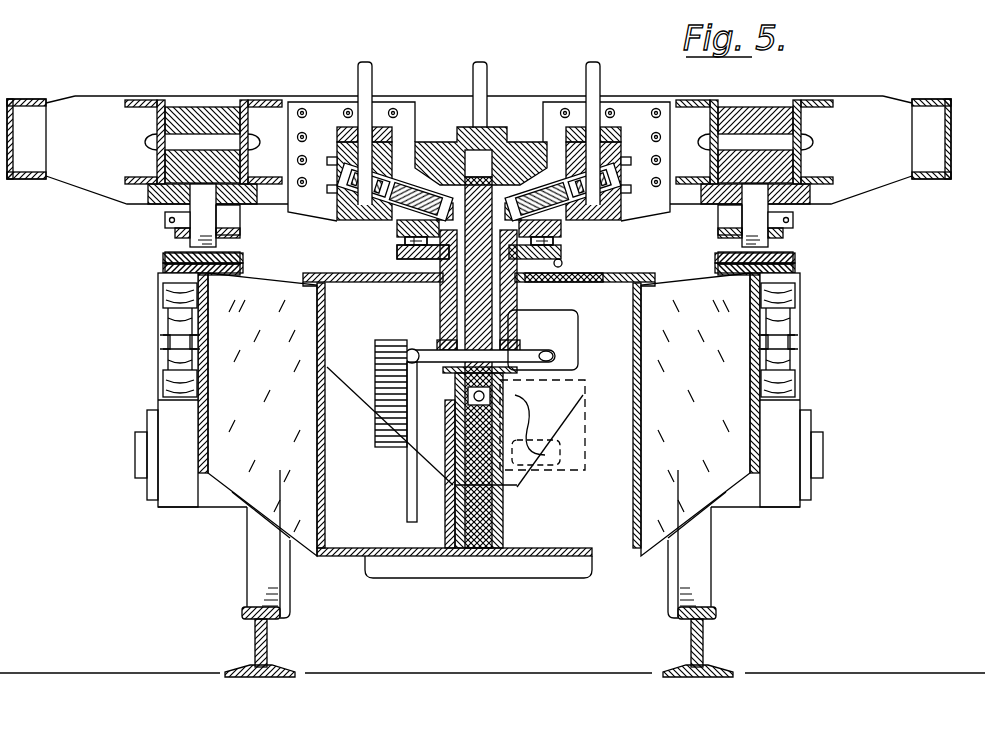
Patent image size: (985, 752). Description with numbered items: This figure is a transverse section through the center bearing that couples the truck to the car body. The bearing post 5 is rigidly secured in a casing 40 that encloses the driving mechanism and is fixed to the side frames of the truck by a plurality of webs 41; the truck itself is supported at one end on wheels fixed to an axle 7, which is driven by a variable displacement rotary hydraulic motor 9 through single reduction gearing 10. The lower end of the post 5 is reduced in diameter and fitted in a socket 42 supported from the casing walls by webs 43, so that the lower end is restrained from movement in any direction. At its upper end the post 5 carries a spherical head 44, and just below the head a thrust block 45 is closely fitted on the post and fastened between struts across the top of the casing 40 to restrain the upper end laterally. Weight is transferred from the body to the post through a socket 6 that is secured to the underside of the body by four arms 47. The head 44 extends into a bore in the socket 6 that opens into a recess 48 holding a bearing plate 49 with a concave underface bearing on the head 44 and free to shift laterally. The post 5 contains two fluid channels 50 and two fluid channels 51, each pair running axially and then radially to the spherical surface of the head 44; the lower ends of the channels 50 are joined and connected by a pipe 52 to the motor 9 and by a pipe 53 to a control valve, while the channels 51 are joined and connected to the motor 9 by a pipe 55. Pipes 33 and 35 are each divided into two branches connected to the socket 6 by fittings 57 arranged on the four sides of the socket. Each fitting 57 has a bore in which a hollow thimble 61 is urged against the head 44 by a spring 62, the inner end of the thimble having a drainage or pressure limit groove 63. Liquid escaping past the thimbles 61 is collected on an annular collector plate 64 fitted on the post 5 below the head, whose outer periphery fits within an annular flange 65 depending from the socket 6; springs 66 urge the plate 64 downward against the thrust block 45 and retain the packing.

The bearing post 5 is at (505, 492).
The socket 6 is at (426, 150).
The axle 7 is at (135, 455).
The variable displacement rotary hydraulic motor 9 is at (565, 342).
The reduction gearing 10 is at (375, 366).
The pipe 33 is at (362, 72).
The pipe 35 is at (484, 75).
The casing 40 is at (340, 560).
The webs 41 is at (479, 404).
The socket 42 is at (455, 522).
The webs 43 is at (446, 447).
The spherical head 44 is at (440, 150).
The thrust block 45 is at (400, 282).
The arms 47 is at (316, 118).
The recess 48 is at (508, 168).
The bearing plate 49 is at (470, 162).
The fluid channels 50 is at (440, 306).
The fluid channels 51 is at (455, 330).
The pipe 52 is at (520, 336).
The pipe 53 is at (412, 349).
The pipe 55 is at (522, 428).
The fitting 57 is at (337, 221).
The thimble 61 is at (475, 198).
The spring 62 is at (333, 190).
The drainage or pressure limit groove 63 is at (523, 201).
The annular collector plate 64 is at (420, 258).
The annular flange 65 is at (400, 250).
The springs 66 is at (548, 250).